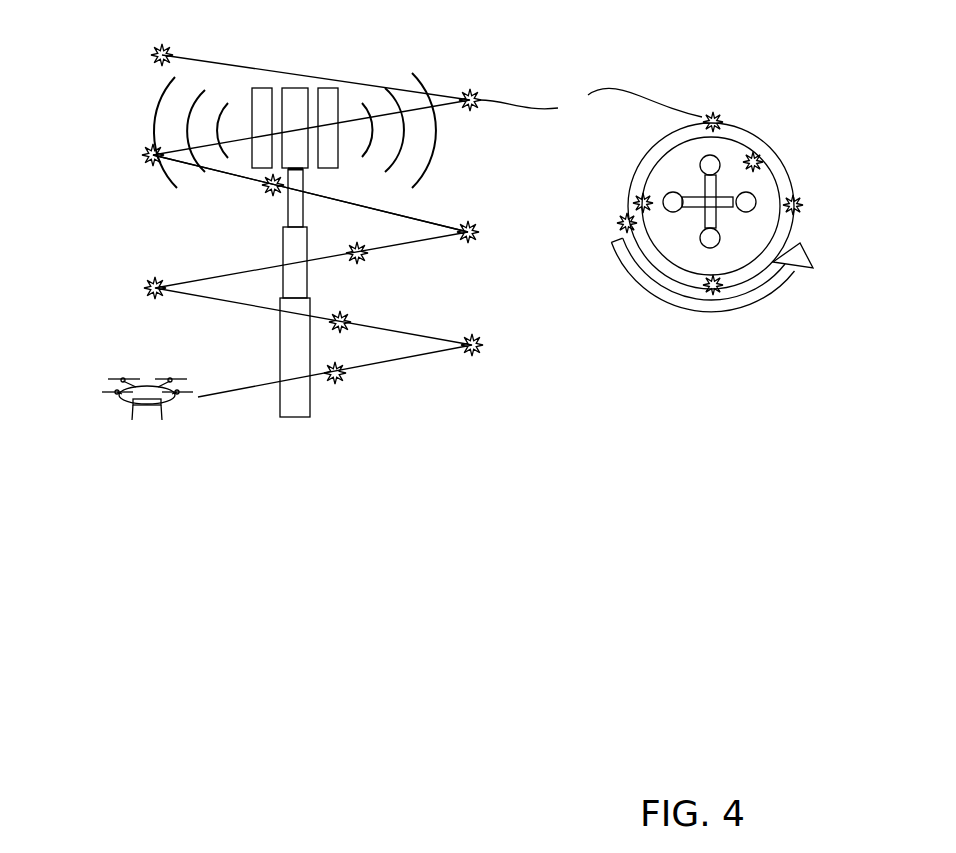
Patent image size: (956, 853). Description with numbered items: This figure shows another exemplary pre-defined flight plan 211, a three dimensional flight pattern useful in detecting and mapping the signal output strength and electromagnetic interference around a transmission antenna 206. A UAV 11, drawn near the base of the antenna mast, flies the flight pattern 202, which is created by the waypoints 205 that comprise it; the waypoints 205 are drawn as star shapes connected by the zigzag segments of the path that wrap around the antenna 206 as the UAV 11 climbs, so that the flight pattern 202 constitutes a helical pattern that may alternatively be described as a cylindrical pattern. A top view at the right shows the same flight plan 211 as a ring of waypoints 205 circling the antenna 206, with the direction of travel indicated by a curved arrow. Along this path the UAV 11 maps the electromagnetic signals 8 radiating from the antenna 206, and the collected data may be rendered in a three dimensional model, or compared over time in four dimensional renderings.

The electromagnetic signals 8 is at (140, 103).
The UAV 11 is at (112, 398).
The flight pattern 202 is at (285, 202).
The waypoints 205 is at (591, 102).
The transmission antenna 206 is at (350, 98).
The flight plan 211 is at (420, 214).